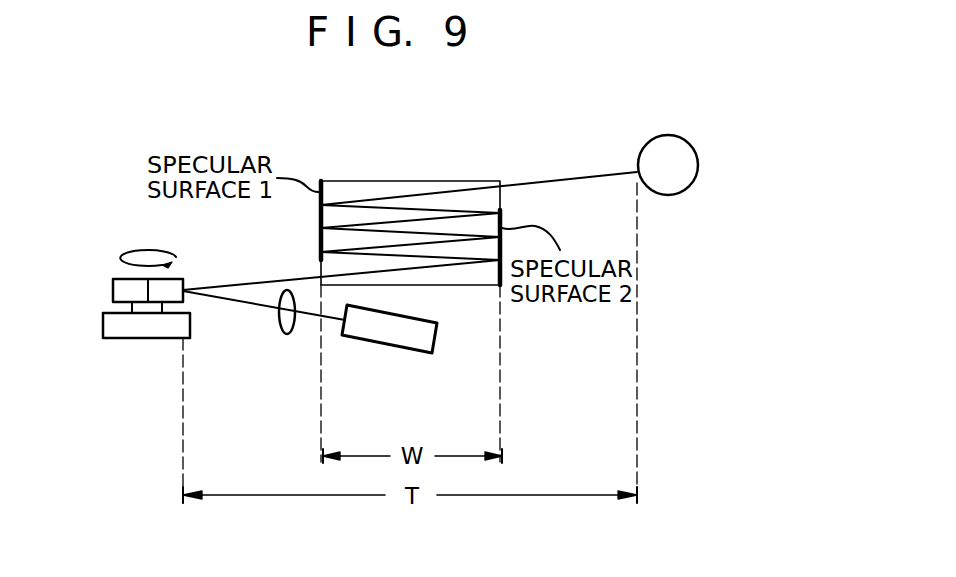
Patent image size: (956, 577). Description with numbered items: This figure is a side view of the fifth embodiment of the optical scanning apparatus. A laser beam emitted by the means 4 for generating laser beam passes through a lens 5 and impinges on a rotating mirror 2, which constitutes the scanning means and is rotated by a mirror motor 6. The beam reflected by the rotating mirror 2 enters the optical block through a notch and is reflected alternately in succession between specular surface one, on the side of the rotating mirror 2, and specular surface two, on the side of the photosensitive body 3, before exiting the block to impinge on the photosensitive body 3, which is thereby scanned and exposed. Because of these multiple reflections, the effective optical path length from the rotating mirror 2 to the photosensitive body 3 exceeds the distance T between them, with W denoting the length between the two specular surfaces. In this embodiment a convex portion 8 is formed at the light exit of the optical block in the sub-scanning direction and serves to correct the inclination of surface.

The rotating mirror 2 is at (113, 281).
The photosensitive body 3 is at (680, 194).
The means for generating laser beam 4 is at (420, 355).
The lens 5 is at (286, 335).
The mirror motor 6 is at (112, 339).
The convex portion 8 is at (501, 210).